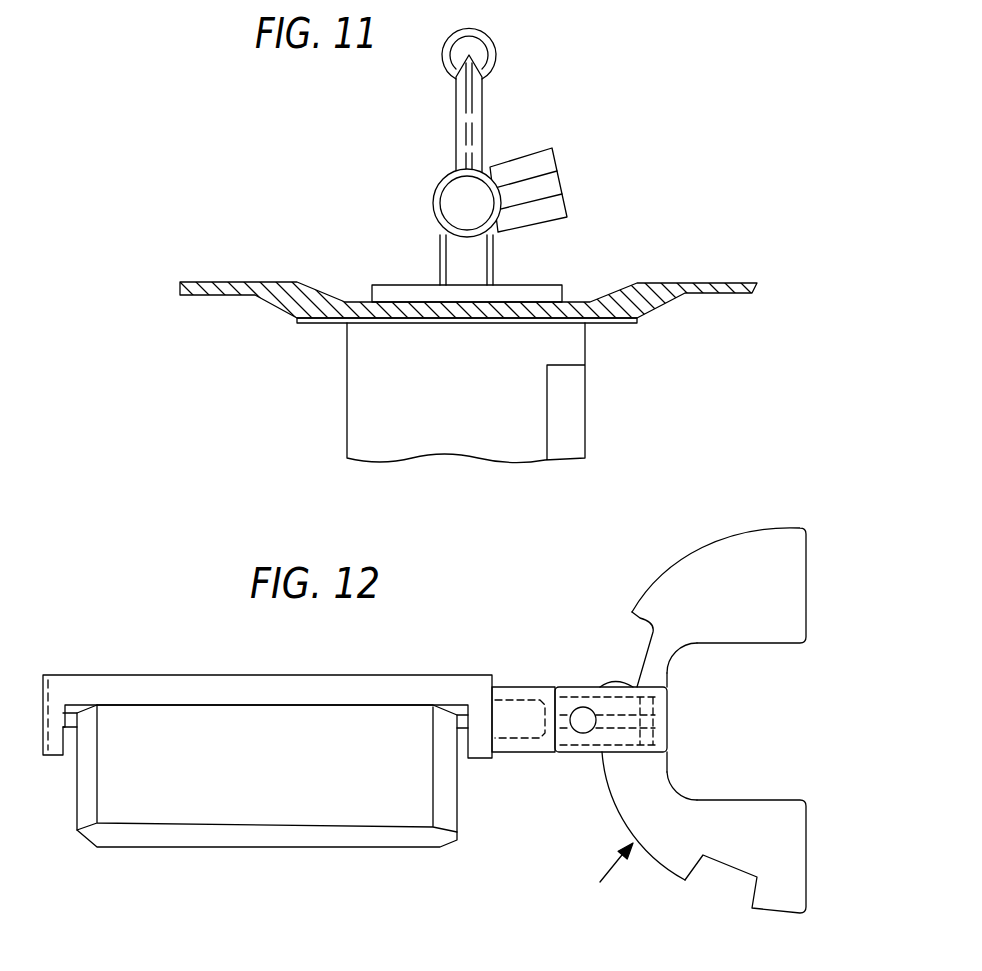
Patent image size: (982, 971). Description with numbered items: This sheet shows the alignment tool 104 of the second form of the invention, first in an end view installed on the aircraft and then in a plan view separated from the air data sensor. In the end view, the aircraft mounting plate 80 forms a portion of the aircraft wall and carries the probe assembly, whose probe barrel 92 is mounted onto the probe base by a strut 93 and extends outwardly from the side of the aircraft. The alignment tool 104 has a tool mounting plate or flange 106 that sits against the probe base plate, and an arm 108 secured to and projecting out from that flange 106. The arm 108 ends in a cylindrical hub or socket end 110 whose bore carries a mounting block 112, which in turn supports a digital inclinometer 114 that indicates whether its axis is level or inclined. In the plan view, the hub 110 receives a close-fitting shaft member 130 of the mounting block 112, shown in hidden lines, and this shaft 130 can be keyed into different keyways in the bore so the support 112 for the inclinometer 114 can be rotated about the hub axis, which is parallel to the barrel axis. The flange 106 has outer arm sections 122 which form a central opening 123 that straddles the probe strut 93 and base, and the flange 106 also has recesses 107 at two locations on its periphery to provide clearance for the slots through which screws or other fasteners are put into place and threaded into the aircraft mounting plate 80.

In FIG. 11, the aircraft mounting plate 80 is at (322, 285).
In FIG. 11, the probe barrel 92 is at (445, 57).
In FIG. 11, the strut 93 is at (462, 132).
In FIG. 12, the alignment tool 104 is at (594, 877).
In FIG. 11, the tool mounting plate or flange 106 is at (515, 285).
In FIG. 12, the recesses 107 is at (633, 652).
In FIG. 11, the arm 108 is at (440, 257).
In FIG. 12, the arm 108 is at (585, 752).
In FIG. 12, the hub or socket end 110 is at (515, 690).
In FIG. 11, the mounting block 112 is at (453, 230).
In FIG. 12, the mounting block 112 is at (405, 683).
In FIG. 11, the digital inclinometer 114 is at (520, 157).
In FIG. 12, the digital inclinometer 114 is at (313, 730).
In FIG. 12, the outer arm sections 122 is at (778, 612).
In FIG. 12, the central opening 123 is at (777, 713).
In FIG. 12, the shaft member 130 is at (518, 740).